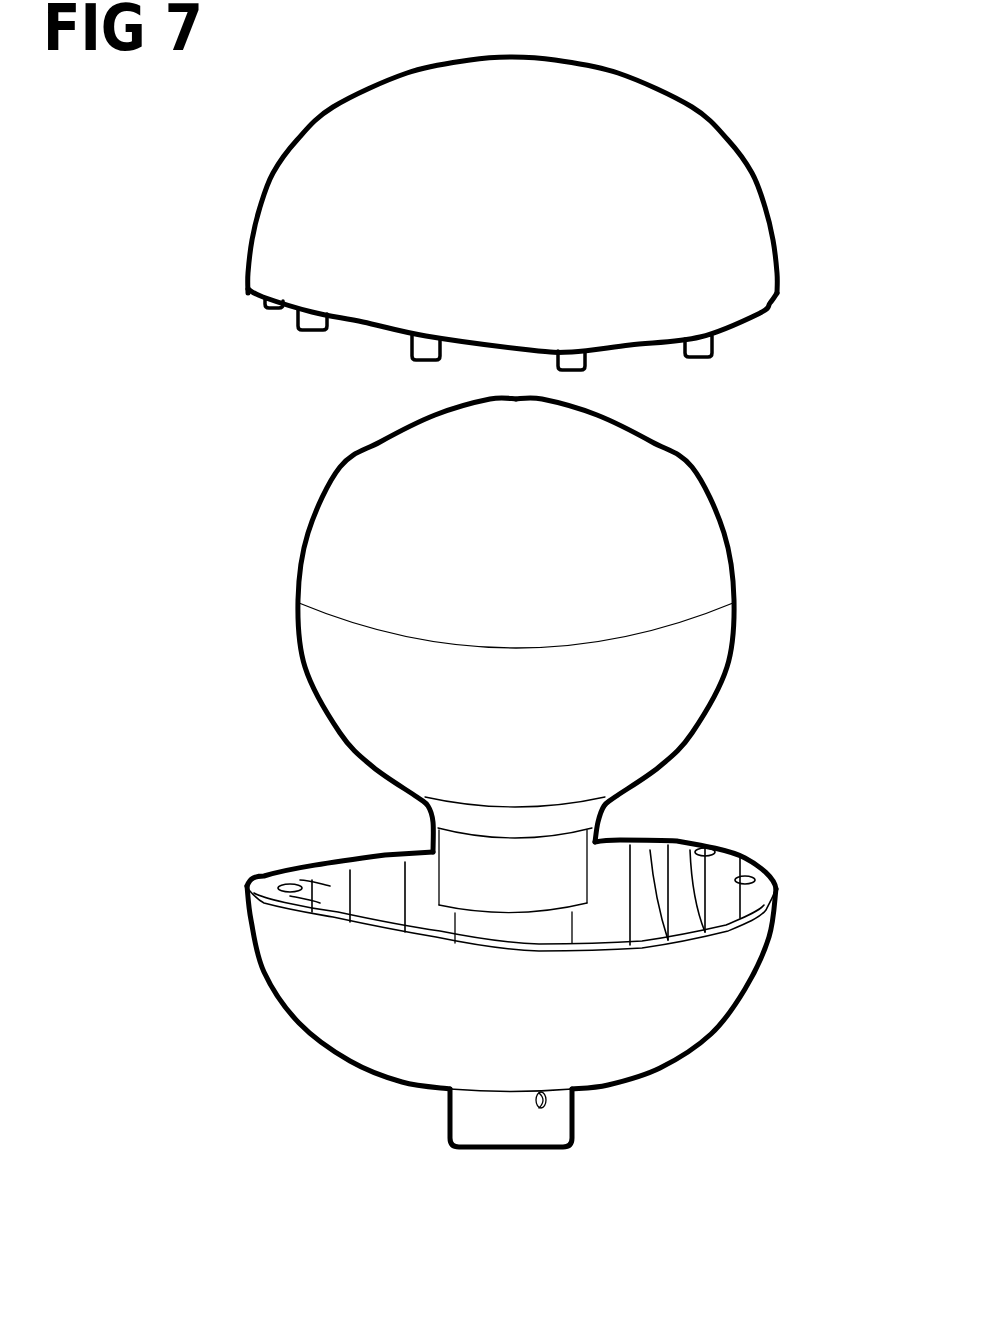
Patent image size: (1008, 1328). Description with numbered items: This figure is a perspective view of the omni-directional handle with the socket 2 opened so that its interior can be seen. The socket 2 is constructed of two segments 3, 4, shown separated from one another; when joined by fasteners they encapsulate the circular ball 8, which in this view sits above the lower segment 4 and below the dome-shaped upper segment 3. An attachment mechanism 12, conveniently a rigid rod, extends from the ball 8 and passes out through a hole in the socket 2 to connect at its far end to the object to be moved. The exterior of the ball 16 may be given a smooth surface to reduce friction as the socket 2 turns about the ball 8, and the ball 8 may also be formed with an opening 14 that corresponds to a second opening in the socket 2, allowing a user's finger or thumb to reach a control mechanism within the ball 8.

The socket 2 is at (340, 153).
The socket segment 3 is at (693, 227).
The socket segment 4 is at (657, 1025).
The circular ball 8 is at (317, 466).
The attachment mechanism 12 is at (487, 1108).
The opening 14 is at (524, 414).
The exterior of the ball 16 is at (667, 653).